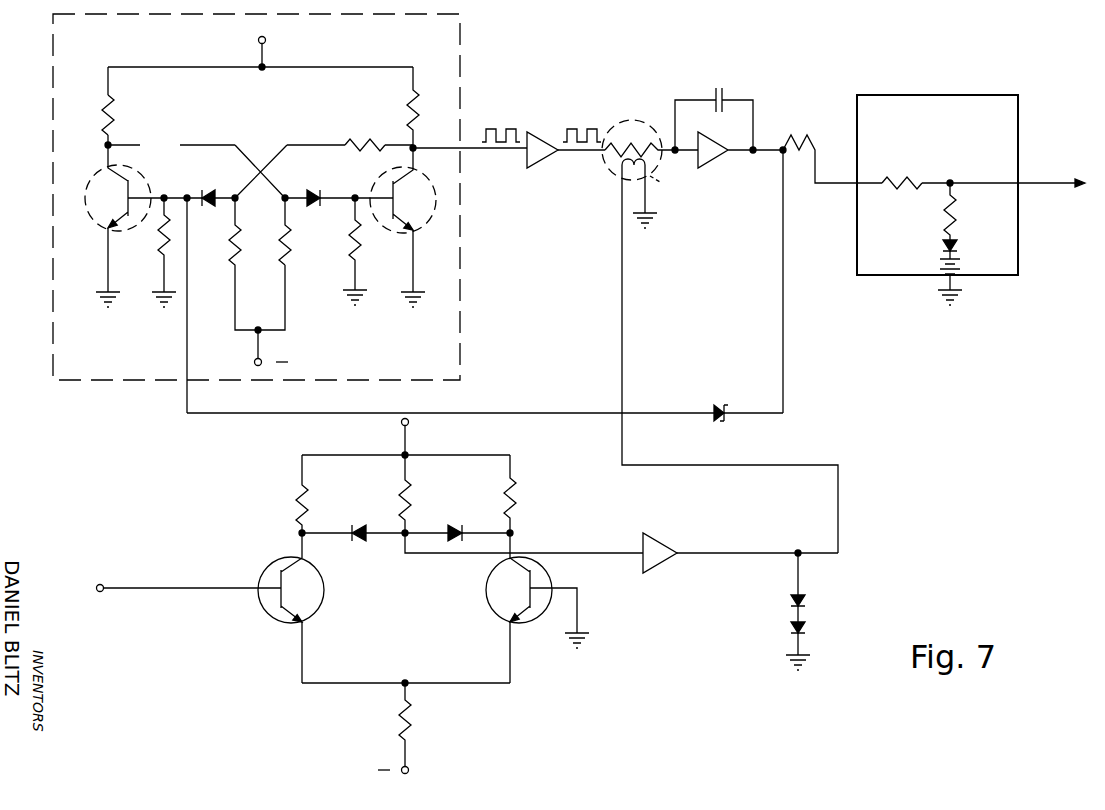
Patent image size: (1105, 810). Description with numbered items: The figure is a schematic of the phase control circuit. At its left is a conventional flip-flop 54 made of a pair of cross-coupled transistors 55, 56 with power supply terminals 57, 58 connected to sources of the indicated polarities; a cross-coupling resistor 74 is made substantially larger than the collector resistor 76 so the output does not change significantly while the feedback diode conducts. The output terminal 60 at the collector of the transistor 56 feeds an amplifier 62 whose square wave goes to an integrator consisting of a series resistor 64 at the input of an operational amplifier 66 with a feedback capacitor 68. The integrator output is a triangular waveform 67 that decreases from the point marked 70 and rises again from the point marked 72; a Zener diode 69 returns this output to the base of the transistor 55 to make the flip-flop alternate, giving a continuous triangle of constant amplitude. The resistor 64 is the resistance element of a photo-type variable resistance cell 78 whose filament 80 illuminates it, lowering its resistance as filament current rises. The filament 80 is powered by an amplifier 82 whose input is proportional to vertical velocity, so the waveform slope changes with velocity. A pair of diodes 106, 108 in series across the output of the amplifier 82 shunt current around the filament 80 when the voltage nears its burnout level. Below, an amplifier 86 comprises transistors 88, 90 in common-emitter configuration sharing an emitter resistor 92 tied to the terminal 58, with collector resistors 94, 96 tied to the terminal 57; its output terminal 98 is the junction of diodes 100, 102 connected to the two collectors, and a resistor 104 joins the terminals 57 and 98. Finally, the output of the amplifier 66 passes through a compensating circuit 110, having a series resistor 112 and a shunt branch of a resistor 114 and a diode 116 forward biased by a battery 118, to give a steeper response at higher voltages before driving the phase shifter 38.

The phase shifter 38 is at (1055, 234).
The flip-flop 54 is at (52, 286).
The transistor 55 is at (85, 200).
The transistor 56 is at (437, 218).
The power supply terminal 57 is at (258, 40).
The power supply terminal 58 is at (254, 362).
The output terminal 60 is at (416, 146).
The amplifier 62 is at (543, 133).
The series resistor 64 is at (620, 120).
The operational amplifier 66 is at (712, 161).
The triangular waveform 67 is at (796, 107).
The capacitor 68 is at (723, 110).
The Zener diode 69 is at (723, 406).
The decreasing portion of triangular waveform 70 is at (777, 145).
The increasing portion of triangular waveform 72 is at (784, 155).
The cross-coupling resistor 74 is at (365, 138).
The collector resistor 76 is at (415, 96).
The photo-type variable resistance cell 78 is at (660, 182).
The filament 80 is at (622, 172).
The amplifier 82 is at (660, 547).
The amplifier 86 is at (297, 505).
The transistor 88 is at (266, 578).
The transistor 90 is at (548, 580).
The emitter resistor 92 is at (412, 733).
The collector resistor 94 is at (310, 519).
The collector resistor 96 is at (520, 504).
The output terminal 98 is at (405, 548).
The diode 100 is at (358, 548).
The diode 102 is at (455, 548).
The resistor 104 is at (412, 506).
The diode 106 is at (810, 602).
The diode 108 is at (810, 630).
The compensating circuit 110 is at (1010, 158).
The series resistor 112 is at (922, 192).
The resistor 114 is at (958, 218).
The diode 116 is at (960, 247).
The battery 118 is at (963, 271).